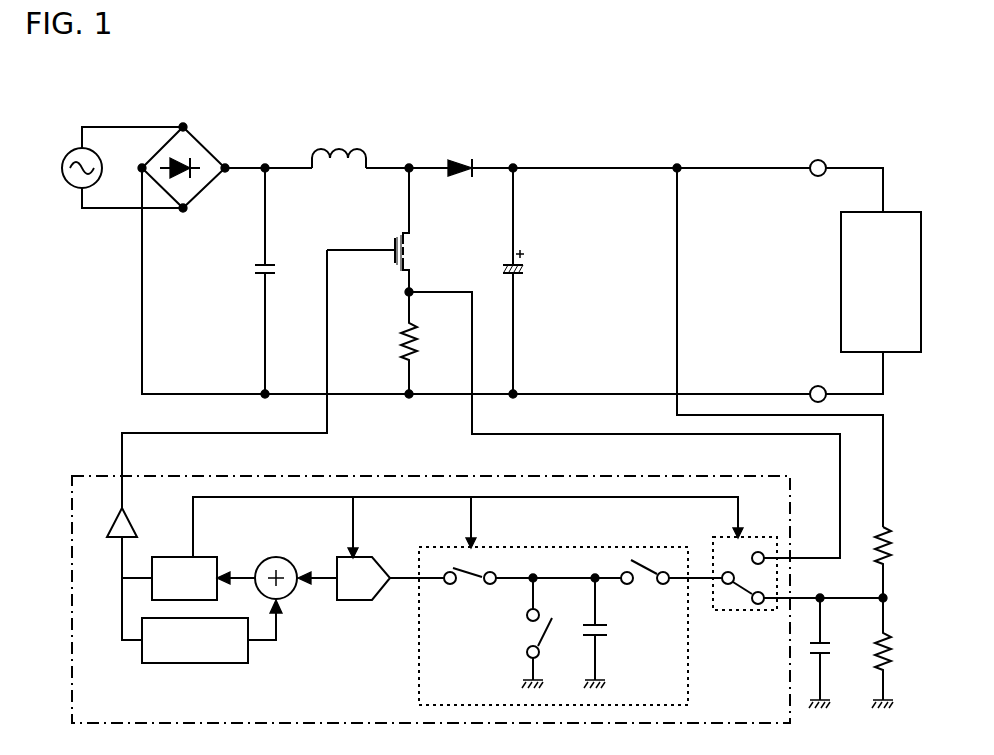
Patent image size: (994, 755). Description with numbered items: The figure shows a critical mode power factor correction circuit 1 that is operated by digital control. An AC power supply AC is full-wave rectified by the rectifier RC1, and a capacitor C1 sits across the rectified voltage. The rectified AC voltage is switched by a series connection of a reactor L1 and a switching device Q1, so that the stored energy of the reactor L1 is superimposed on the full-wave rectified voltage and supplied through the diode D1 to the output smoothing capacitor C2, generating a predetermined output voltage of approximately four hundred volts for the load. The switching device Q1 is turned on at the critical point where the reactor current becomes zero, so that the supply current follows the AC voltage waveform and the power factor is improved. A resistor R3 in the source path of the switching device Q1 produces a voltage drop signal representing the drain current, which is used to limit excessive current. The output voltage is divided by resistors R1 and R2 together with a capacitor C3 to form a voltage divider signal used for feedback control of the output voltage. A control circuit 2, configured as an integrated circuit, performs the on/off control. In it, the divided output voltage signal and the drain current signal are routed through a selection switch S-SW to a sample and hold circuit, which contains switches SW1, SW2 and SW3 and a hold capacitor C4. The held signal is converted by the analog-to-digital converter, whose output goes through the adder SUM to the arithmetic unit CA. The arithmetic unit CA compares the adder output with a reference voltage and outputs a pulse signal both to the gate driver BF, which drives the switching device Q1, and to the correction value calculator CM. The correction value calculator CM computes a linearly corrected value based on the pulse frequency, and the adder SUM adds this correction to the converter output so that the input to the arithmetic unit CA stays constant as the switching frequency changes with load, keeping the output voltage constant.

The critical mode power factor correction circuit 1 is at (561, 110).
The control circuit 2 is at (388, 475).
The AC power supply AC is at (107, 165).
The rectifier RC1 is at (184, 167).
The capacitor C1 is at (272, 281).
The reactor L1 is at (362, 141).
The diode D1 is at (460, 159).
The switching device Q1 is at (384, 230).
The resistor R3 is at (422, 343).
The output smoothing capacitor C2 is at (525, 281).
The resistor R1 is at (896, 562).
The resistor R2 is at (894, 653).
The capacitor C3 is at (827, 653).
The gate driver BF is at (120, 574).
The arithmetic unit CA is at (176, 556).
The adder SUM is at (276, 556).
The correction value calculator CM is at (213, 664).
The switch SW1 is at (645, 587).
The switch SW2 is at (470, 589).
The switch SW3 is at (516, 633).
The hold capacitor C4 is at (607, 633).
The selection switch S-SW is at (745, 608).